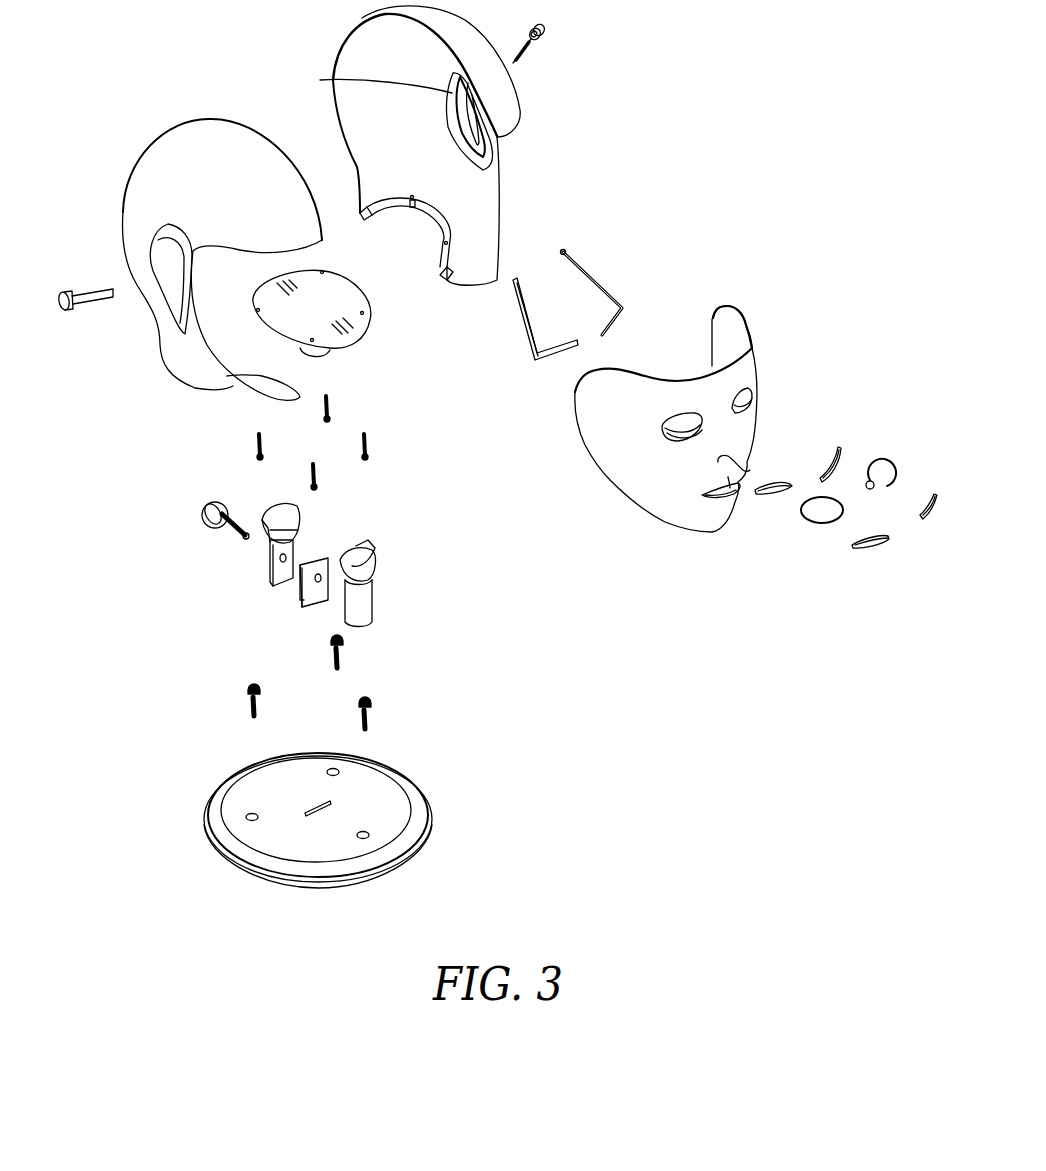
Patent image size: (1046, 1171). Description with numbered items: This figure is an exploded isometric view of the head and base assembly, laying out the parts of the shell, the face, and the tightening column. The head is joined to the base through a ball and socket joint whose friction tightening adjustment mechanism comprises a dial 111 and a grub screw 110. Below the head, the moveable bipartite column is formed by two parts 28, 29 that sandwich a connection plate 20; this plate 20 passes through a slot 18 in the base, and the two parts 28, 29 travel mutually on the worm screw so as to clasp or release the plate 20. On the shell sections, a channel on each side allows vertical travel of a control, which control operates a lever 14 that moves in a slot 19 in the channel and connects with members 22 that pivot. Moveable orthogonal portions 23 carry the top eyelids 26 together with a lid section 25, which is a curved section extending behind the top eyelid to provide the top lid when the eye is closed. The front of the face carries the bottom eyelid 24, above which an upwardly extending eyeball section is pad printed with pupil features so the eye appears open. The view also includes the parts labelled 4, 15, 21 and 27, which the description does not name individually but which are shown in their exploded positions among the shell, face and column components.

The bolt head 4 is at (67, 290).
The lever 14 is at (106, 288).
The cover plate 15 is at (367, 318).
The slot 18 is at (313, 803).
The slot 19 is at (333, 80).
The connection plate 20 is at (300, 598).
The strip 21 is at (412, 208).
The member 22 is at (585, 264).
The moveable orthogonal portion 23 is at (612, 328).
The bottom eyelid 24 is at (838, 445).
The lid section 25 is at (885, 460).
The top eyelid 26 is at (929, 522).
The clamp 27 is at (298, 512).
The column part 28 is at (375, 605).
The column part 29 is at (270, 570).
The grub screw 110 is at (201, 510).
The dial 111 is at (248, 524).